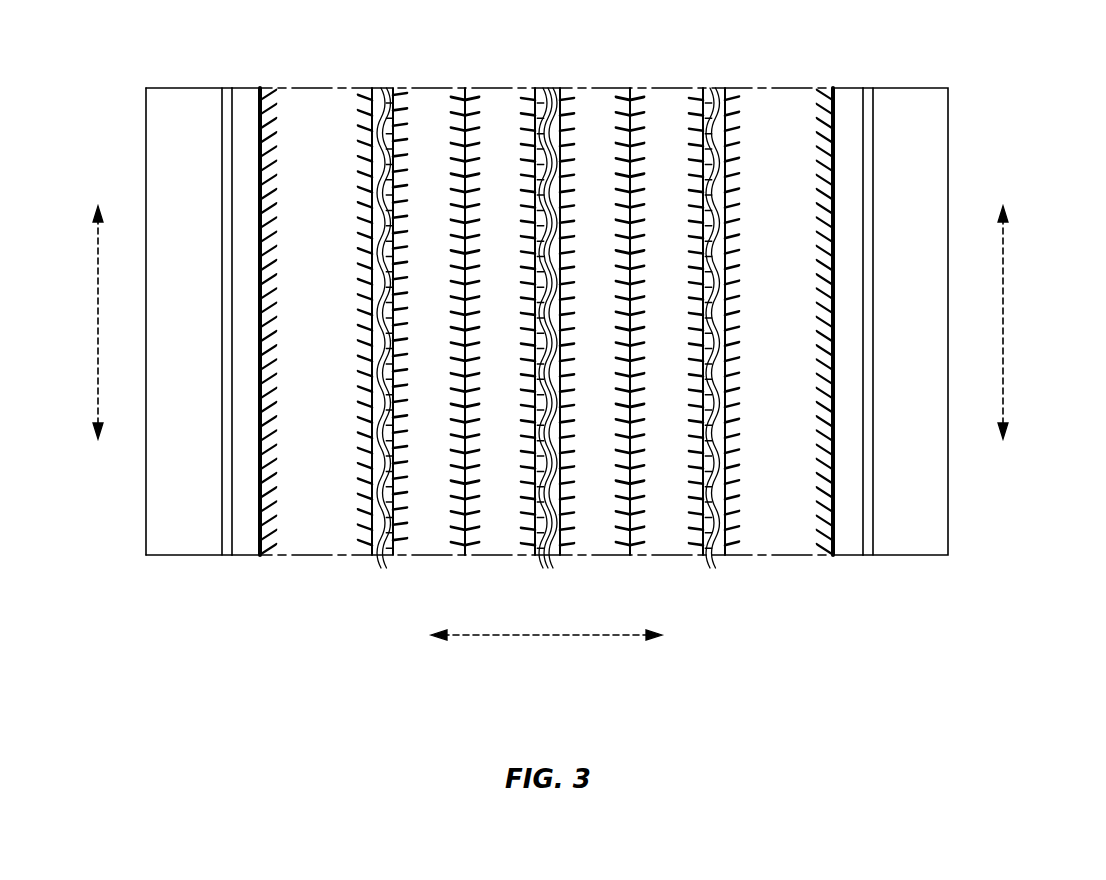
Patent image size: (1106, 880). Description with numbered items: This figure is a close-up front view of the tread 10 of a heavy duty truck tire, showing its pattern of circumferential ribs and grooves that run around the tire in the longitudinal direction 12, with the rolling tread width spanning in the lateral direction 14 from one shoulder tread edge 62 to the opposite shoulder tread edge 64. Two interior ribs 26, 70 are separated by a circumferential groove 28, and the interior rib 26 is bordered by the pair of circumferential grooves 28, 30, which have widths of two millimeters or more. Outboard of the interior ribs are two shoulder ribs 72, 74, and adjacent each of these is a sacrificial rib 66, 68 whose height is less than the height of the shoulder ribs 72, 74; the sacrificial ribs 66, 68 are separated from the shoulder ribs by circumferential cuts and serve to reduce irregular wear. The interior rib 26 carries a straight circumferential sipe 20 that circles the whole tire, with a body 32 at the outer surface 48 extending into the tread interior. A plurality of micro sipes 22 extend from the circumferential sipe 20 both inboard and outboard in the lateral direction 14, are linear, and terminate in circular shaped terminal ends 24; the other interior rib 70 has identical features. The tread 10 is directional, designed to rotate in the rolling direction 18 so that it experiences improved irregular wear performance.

The tread 10 is at (680, 108).
The longitudinal direction 12 is at (97, 323).
The lateral direction 14 is at (548, 635).
The rolling direction 18 is at (1005, 323).
The circumferential sipe 20 is at (565, 108).
The micro sipes 22 is at (528, 163).
The circular shaped terminal ends 24 is at (572, 163).
The interior rib 26 is at (590, 532).
The circumferential groove 28 is at (556, 319).
The circumferential groove 30 is at (710, 550).
The body 32 is at (636, 432).
The outer surface 48 is at (296, 108).
The shoulder tread edge 62 is at (222, 122).
The shoulder tread edge 64 is at (873, 122).
The sacrificial rib 66 is at (248, 540).
The sacrificial rib 68 is at (848, 545).
The interior rib 70 is at (428, 108).
The shoulder rib 72 is at (325, 108).
The shoulder rib 74 is at (653, 105).